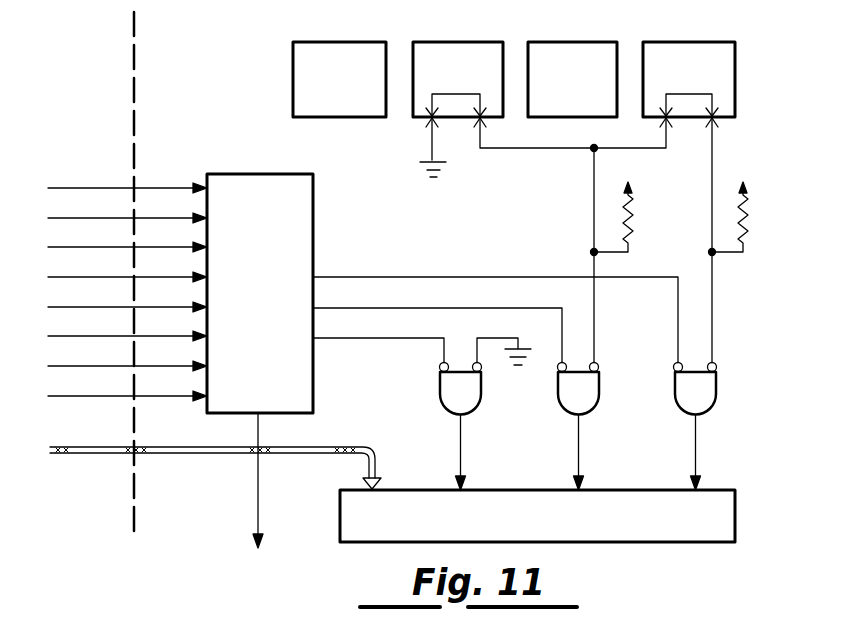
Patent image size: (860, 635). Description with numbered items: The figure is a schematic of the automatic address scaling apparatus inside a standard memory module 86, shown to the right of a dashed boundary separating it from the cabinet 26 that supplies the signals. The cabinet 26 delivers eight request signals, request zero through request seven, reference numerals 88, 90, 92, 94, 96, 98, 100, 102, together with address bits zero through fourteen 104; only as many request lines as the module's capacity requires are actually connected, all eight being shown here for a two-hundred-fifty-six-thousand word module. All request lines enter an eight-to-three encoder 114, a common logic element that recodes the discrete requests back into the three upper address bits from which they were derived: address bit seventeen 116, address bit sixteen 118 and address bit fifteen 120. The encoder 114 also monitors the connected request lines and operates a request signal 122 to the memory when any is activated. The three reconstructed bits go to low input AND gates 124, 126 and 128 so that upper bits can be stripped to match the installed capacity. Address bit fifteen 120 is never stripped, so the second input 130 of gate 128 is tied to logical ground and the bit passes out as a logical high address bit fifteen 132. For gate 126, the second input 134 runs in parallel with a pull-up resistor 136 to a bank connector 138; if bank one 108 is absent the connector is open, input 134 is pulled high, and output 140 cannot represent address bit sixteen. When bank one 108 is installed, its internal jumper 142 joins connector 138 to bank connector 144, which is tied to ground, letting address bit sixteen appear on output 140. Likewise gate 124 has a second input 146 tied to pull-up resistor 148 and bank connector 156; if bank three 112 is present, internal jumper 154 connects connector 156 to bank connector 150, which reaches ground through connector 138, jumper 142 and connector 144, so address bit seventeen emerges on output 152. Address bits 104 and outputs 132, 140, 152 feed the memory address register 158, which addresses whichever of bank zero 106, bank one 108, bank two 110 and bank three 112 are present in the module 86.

The cabinet 26 is at (62, 75).
The memory module 86 is at (186, 75).
The request 0 signal 88 is at (143, 187).
The request 1 signal 90 is at (143, 217).
The request 2 signal 92 is at (143, 246).
The request 3 signal 94 is at (143, 276).
The request 4 signal 96 is at (143, 306).
The request 5 signal 98 is at (143, 335).
The request 6 signal 100 is at (143, 365).
The request 7 signal 102 is at (143, 395).
The address bits 0 through 14 104 is at (145, 446).
The bank 0 106 is at (330, 42).
The bank 1 108 is at (450, 42).
The bank 2 110 is at (563, 42).
The bank 3 112 is at (678, 42).
The 8-to-3 encoder 114 is at (245, 174).
The address bit 17 116 is at (432, 277).
The address bit 16 118 is at (432, 308).
The address bit 15 120 is at (432, 338).
The request signal 122 is at (256, 496).
The low input AND gate 124 is at (717, 398).
The low input AND gate 126 is at (600, 398).
The low input AND gate 128 is at (482, 398).
The second input 130 is at (503, 338).
The logical high address bit 15 132 is at (463, 472).
The second input 134 is at (597, 324).
The pull-up resistor 136 is at (632, 216).
The bank connector 138 is at (486, 121).
The output 140 is at (581, 472).
The internal jumper 142 is at (450, 94).
The bank connector 144 is at (429, 121).
The second input 146 is at (714, 324).
The pull-up resistor 148 is at (747, 216).
The bank connector 150 is at (662, 121).
The output 152 is at (698, 472).
The internal jumper 154 is at (683, 94).
The bank connector 156 is at (717, 121).
The memory address register 158 is at (695, 542).